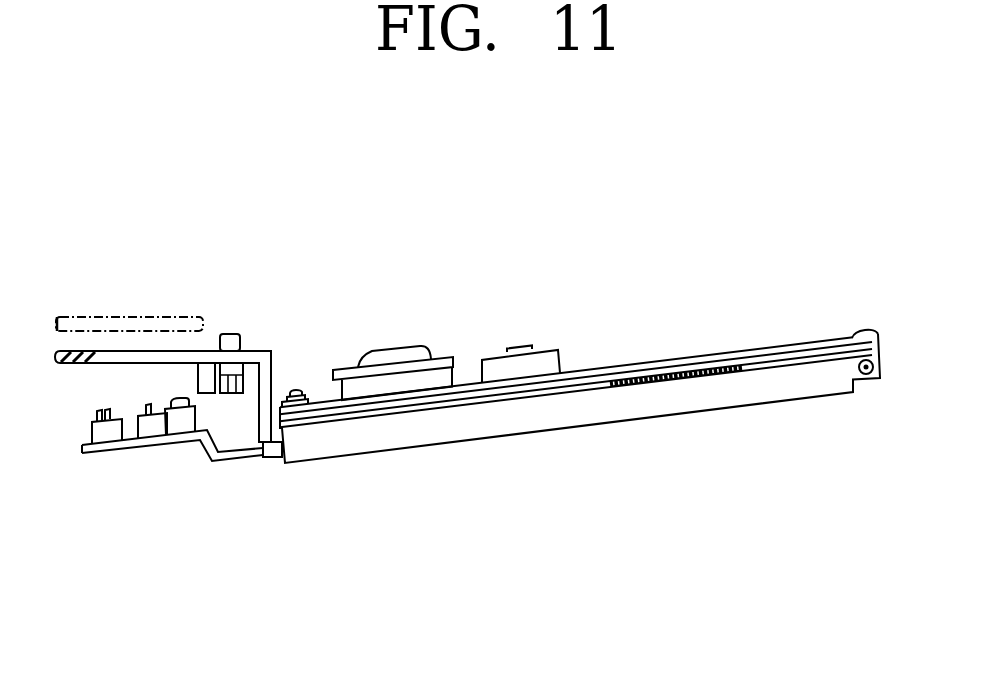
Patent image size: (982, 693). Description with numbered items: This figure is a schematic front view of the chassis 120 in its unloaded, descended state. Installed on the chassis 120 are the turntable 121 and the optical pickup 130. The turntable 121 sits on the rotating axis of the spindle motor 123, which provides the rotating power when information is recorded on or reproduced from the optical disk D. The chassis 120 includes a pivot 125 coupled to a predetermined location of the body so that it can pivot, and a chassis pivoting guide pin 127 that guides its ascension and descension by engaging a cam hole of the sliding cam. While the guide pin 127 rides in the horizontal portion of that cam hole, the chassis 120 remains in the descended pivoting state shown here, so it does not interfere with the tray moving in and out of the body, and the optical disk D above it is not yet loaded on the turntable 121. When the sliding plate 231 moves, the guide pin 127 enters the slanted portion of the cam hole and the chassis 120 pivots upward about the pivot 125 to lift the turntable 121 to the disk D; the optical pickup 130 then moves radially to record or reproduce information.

The optical disk D is at (128, 317).
The chassis 120 is at (789, 328).
The turntable 121 is at (393, 348).
The spindle motor 123 is at (436, 382).
The pivot 125 is at (867, 375).
The chassis pivoting guide pin 127 is at (273, 457).
The optical pickup 130 is at (542, 365).
The sliding plate 231 is at (258, 350).